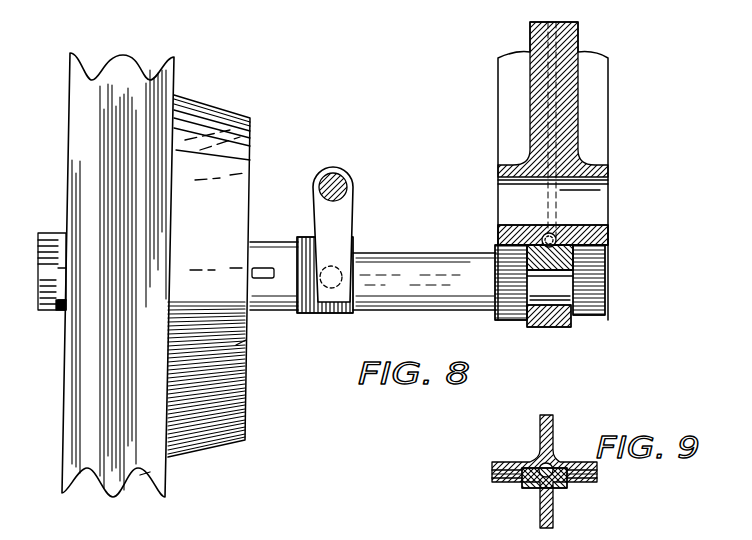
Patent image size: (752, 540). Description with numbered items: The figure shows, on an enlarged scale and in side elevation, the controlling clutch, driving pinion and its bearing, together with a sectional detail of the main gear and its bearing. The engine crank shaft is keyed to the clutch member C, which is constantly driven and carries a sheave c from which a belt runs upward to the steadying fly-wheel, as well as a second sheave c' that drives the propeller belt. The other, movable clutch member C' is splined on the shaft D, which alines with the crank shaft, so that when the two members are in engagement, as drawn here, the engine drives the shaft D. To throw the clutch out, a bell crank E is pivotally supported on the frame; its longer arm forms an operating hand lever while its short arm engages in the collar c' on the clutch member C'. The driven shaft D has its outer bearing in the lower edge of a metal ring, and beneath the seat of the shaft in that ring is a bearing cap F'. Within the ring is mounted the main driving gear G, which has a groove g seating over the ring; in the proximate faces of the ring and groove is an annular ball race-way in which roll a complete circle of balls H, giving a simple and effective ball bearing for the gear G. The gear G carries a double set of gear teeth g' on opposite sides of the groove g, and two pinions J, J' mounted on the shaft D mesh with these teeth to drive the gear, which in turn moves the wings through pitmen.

In FIG. 8, the clutch member C is at (220, 275).
In FIG. 8, the movable clutch member C' is at (261, 367).
In FIG. 8, the collar c' is at (55, 319).
In FIG. 8, the sheave c is at (166, 483).
In FIG. 8, the shaft D is at (418, 266).
In FIG. 8, the bell crank E is at (343, 213).
In FIG. 8, the main driving gear G is at (575, 33).
In FIG. 8, the groove g is at (561, 225).
In FIG. 9, the groove g is at (544, 471).
In FIG. 9, the gear teeth g' is at (551, 497).
In FIG. 8, the balls H is at (540, 225).
In FIG. 8, the pinion J is at (502, 301).
In FIG. 8, the pinion J' is at (607, 286).
In FIG. 8, the bearing cap F' is at (550, 305).
In FIG. 9, the bearing cap F' is at (553, 490).